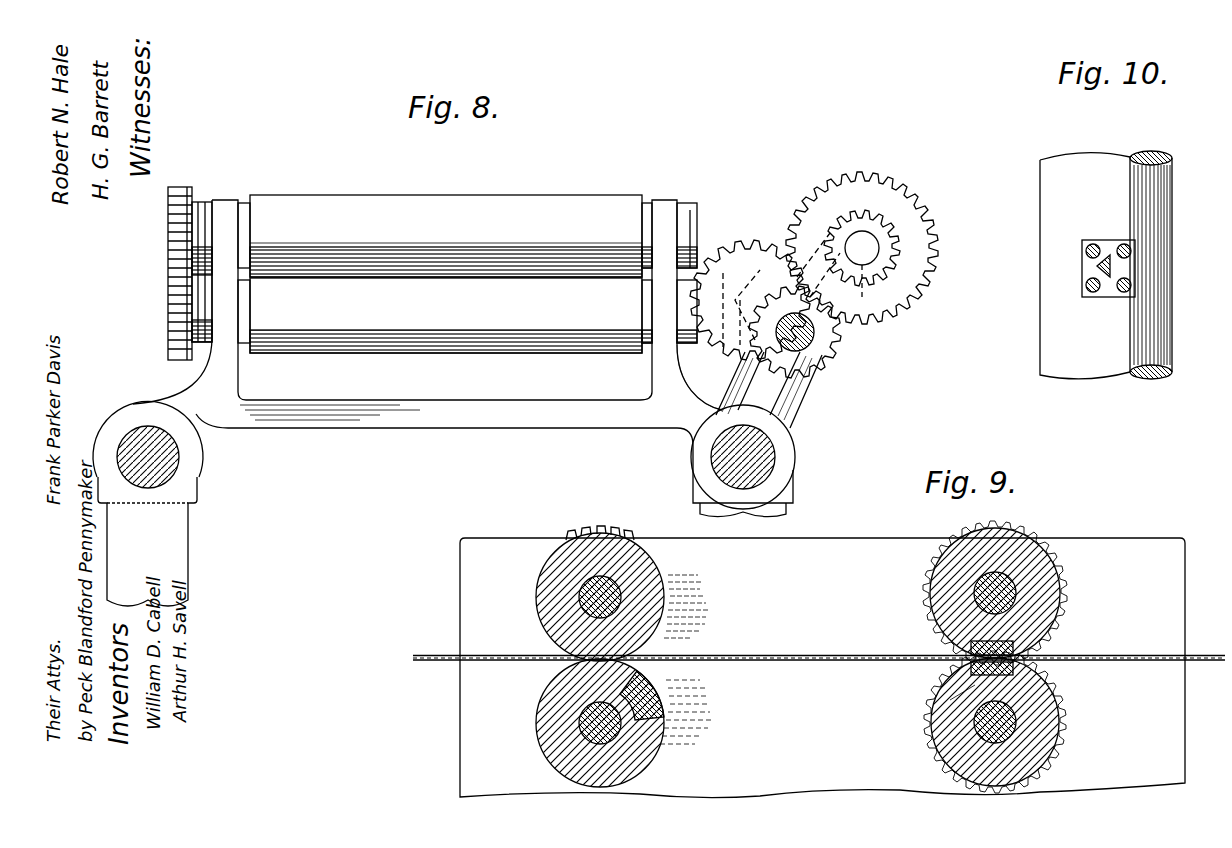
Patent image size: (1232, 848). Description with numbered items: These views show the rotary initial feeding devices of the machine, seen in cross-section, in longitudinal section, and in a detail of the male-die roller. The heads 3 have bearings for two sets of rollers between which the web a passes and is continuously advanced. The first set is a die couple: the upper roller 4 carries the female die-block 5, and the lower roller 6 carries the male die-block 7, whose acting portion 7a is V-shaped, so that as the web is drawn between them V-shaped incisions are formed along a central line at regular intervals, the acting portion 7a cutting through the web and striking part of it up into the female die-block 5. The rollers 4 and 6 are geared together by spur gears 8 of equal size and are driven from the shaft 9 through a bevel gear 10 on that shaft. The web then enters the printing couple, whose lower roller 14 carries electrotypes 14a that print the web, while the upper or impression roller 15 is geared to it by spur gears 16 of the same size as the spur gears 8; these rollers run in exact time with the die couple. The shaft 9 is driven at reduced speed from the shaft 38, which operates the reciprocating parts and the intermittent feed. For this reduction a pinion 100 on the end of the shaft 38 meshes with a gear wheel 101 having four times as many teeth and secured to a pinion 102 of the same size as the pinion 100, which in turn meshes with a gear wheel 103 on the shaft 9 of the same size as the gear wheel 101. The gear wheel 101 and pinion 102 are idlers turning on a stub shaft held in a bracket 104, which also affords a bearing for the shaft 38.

In FIG. 9, the heads 3 is at (1135, 542).
In FIG. 9, the upper roller 4 is at (1078, 522).
In FIG. 9, the female die-block 5 is at (1008, 636).
In FIG. 9, the lower roller 6 is at (1050, 717).
In FIG. 10, the lower roller 6 is at (1060, 353).
In FIG. 9, the male die-block 7 is at (1013, 680).
In FIG. 10, the male die-block 7 is at (1127, 267).
In FIG. 9, the acting portion of male die-block 7a is at (950, 700).
In FIG. 10, the acting portion of male die-block 7a is at (1083, 263).
In FIG. 9, the spur gears 8 is at (1000, 525).
In FIG. 8, the shaft 9 is at (686, 345).
In FIG. 8, the bevel gear 10 is at (172, 292).
In FIG. 9, the lower roller of printing couple 14 is at (553, 740).
In FIG. 9, the electrotypes 14a is at (668, 702).
In FIG. 9, the upper or impression roller 15 is at (640, 515).
In FIG. 9, the spur gears 16 is at (690, 533).
In FIG. 8, the shaft 38 is at (813, 333).
In FIG. 8, the pinion 100 is at (897, 371).
In FIG. 8, the gear wheel 101 is at (962, 187).
In FIG. 8, the pinion 102 is at (877, 207).
In FIG. 8, the gear wheel 103 is at (780, 218).
In FIG. 8, the bracket 104 is at (860, 292).
In FIG. 9, the web a is at (1203, 656).